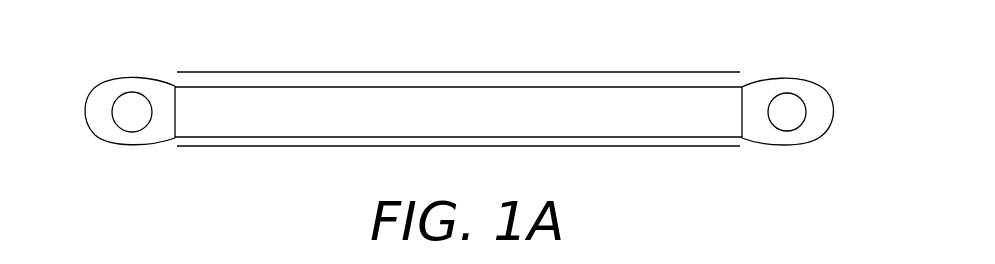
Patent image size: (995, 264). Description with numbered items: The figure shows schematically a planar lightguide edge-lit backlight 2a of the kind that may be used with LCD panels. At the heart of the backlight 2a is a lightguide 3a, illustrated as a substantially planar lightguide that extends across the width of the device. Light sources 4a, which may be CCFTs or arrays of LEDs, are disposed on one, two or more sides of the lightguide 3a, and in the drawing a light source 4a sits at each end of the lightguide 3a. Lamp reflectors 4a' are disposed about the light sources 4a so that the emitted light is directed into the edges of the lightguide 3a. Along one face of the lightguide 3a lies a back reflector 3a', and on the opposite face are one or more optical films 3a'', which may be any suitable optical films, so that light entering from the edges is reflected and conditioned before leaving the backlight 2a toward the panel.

The backlight 2a is at (453, 110).
The lightguide 3a is at (458, 107).
The back reflector 3a' is at (458, 176).
The optical films 3a'' is at (458, 40).
The light sources 4a is at (435, 151).
The lamp reflectors 4a' is at (473, 130).